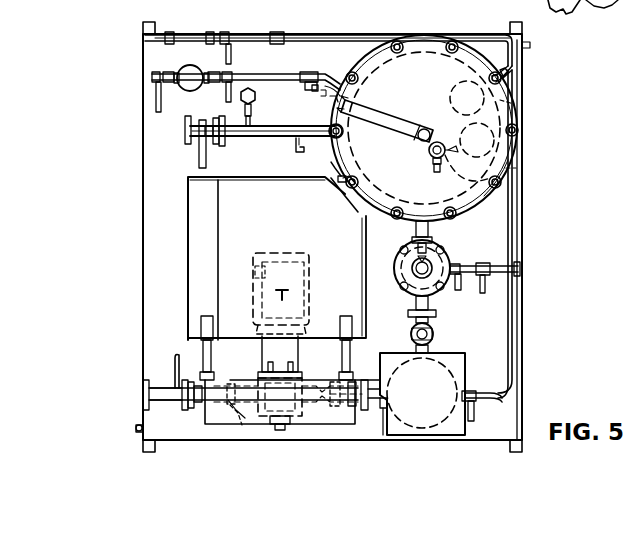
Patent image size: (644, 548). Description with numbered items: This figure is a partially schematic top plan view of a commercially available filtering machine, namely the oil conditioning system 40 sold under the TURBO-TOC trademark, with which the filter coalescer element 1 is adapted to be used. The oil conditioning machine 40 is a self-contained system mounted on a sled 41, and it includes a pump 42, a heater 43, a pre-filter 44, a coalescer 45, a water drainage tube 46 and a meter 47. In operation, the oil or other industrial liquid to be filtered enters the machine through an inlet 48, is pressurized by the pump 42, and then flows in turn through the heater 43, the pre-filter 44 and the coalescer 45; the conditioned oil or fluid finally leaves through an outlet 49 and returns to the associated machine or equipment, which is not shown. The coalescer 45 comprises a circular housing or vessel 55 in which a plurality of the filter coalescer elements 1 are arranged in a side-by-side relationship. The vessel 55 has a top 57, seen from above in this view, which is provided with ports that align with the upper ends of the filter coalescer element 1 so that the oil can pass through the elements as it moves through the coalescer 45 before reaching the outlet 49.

The filter coalescer element 1 is at (518, 104).
The oil conditioning system 40 is at (96, 232).
The sled 41 is at (150, 297).
The pump 42 is at (300, 420).
The heater 43 is at (456, 354).
The pre-filter 44 is at (442, 248).
The coalescer 45 is at (506, 113).
The water drainage tube 46 is at (274, 76).
The meter 47 is at (190, 65).
The inlet 48 is at (142, 396).
The outlet 49 is at (188, 131).
The vessel 55 is at (480, 192).
The top 57 is at (422, 72).